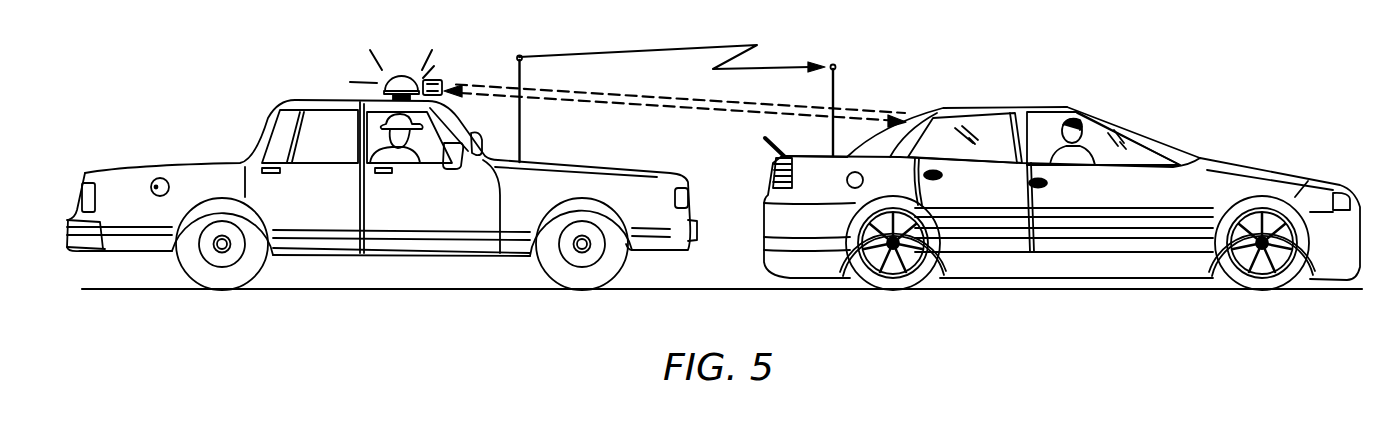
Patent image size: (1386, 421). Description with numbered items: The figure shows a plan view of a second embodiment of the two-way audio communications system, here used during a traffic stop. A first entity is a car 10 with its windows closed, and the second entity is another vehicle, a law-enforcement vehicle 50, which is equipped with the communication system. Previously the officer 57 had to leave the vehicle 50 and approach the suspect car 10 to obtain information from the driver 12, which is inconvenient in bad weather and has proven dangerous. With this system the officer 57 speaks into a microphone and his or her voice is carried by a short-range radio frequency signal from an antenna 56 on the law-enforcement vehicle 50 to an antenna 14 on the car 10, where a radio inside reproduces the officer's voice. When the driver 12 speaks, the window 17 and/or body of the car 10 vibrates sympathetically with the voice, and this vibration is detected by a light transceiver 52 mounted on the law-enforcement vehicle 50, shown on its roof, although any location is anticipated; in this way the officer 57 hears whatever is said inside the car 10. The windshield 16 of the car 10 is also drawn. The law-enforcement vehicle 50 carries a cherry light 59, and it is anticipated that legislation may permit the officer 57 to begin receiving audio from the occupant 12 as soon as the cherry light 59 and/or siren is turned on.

The car 10 is at (1227, 163).
The driver 12 is at (1062, 118).
The antenna 14 is at (838, 85).
The windshield 16 is at (1121, 142).
The window 17 is at (923, 110).
The law-enforcement vehicle 50 is at (243, 128).
The light transceiver 52 is at (443, 78).
The antenna 56 is at (523, 115).
The officer 57 is at (402, 163).
The cherry light 59 is at (402, 76).